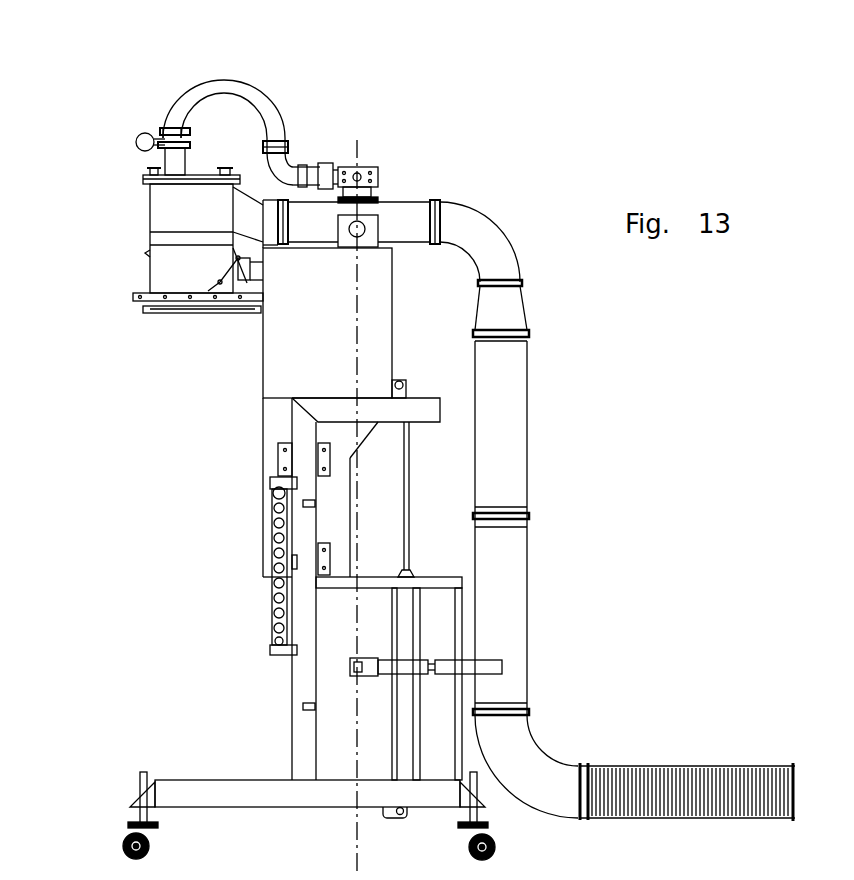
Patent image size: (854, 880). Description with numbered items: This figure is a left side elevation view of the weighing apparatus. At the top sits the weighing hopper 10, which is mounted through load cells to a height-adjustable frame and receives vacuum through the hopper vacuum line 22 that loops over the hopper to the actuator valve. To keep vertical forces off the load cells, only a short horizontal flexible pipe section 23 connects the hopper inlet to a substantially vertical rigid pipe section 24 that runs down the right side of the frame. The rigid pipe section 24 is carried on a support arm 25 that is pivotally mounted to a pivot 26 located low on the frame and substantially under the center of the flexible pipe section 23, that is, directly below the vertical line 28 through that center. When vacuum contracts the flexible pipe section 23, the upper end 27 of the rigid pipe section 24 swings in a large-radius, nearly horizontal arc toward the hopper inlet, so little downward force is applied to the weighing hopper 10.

The weighing hopper 10 is at (148, 220).
The hopper vacuum line 22 is at (250, 104).
The flexible pipe section 23 is at (365, 194).
The rigid pipe section 24 is at (634, 581).
The support bar 25 is at (496, 630).
The pivot 26 is at (282, 710).
The upper end of the rigid pipe section 27 is at (519, 247).
The vertical line 28 is at (293, 339).